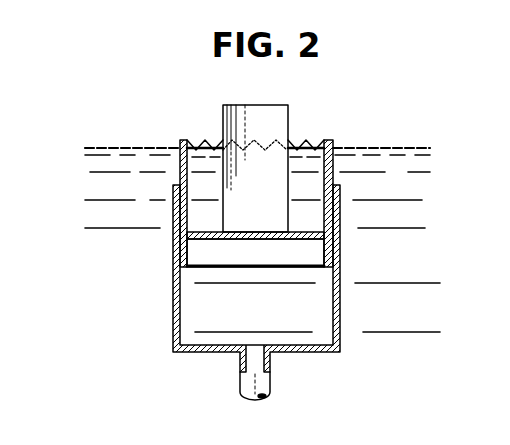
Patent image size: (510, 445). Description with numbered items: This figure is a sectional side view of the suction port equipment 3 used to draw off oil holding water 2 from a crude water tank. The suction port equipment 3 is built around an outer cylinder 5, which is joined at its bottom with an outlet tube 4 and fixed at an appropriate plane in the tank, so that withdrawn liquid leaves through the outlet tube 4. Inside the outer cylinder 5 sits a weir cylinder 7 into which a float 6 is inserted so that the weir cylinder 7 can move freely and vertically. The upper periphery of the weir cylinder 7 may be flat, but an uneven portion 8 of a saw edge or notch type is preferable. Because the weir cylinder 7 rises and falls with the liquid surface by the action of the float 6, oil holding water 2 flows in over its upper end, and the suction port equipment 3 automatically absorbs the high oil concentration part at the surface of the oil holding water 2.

The oil holding water 2 is at (116, 273).
The suction port equipment 3 is at (347, 257).
The outlet tube 4 is at (248, 390).
The outer cylinder 5 is at (340, 318).
The float 6 is at (223, 120).
The weir cylinder 7 is at (336, 140).
The uneven portion 8 is at (300, 146).